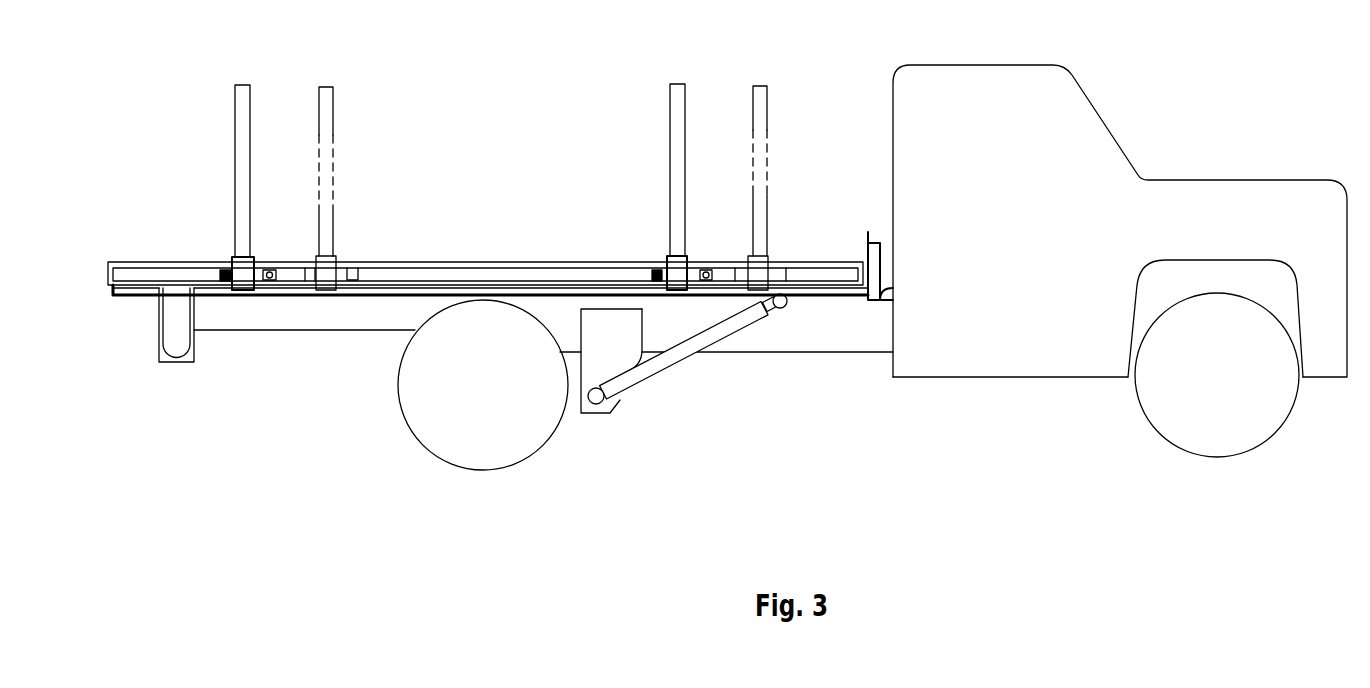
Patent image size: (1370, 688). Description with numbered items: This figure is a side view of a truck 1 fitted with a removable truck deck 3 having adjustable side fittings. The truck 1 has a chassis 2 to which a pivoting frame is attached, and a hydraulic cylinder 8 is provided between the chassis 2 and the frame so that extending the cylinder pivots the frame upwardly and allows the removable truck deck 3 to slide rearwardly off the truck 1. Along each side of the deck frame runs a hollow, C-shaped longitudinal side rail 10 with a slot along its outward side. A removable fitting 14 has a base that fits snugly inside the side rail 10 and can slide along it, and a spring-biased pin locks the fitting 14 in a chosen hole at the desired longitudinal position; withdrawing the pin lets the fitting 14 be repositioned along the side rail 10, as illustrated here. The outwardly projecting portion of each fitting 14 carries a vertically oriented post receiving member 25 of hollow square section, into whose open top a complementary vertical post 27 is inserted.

The truck 1 is at (1206, 94).
The chassis 2 is at (788, 342).
The removable truck deck 3 is at (377, 287).
The hydraulic cylinder 8 is at (675, 360).
The side rail 10 is at (455, 232).
The removable fitting 14 is at (455, 187).
The post receiving member 25 is at (245, 260).
The vertical post 27 is at (242, 147).